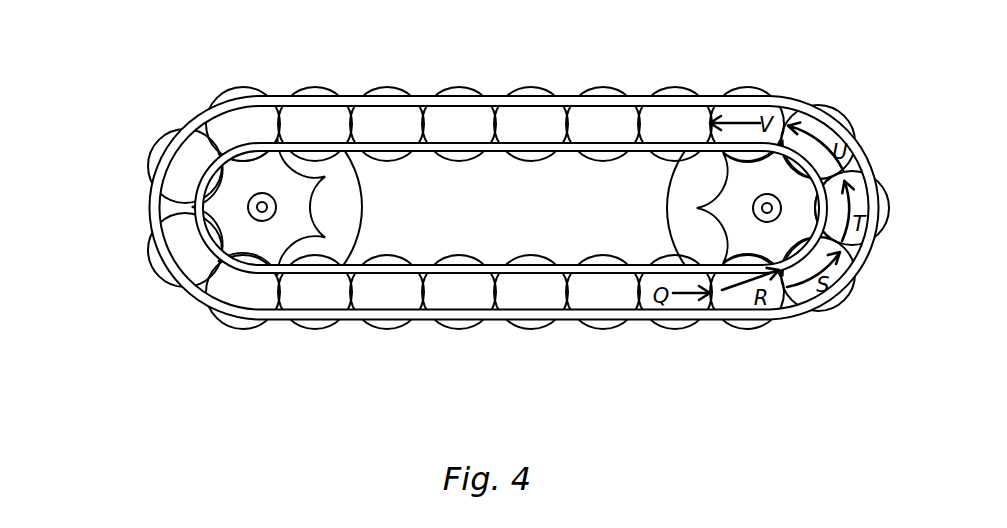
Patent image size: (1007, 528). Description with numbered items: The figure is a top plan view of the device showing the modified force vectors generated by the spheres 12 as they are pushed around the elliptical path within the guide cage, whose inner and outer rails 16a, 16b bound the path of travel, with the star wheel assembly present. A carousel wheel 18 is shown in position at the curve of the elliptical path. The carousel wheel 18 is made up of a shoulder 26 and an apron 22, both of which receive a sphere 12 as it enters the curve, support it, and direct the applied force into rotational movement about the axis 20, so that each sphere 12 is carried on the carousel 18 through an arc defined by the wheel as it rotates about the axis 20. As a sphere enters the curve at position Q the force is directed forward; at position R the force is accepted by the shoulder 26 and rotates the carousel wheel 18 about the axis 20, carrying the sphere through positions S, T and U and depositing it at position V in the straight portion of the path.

The sphere 12 is at (315, 296).
The outer guide rail 16a is at (194, 124).
The inner guide rail 16b is at (198, 229).
The carousel wheel 18 is at (364, 183).
The axis 20 is at (767, 206).
The apron 22 is at (686, 193).
The shoulder 26 is at (765, 250).